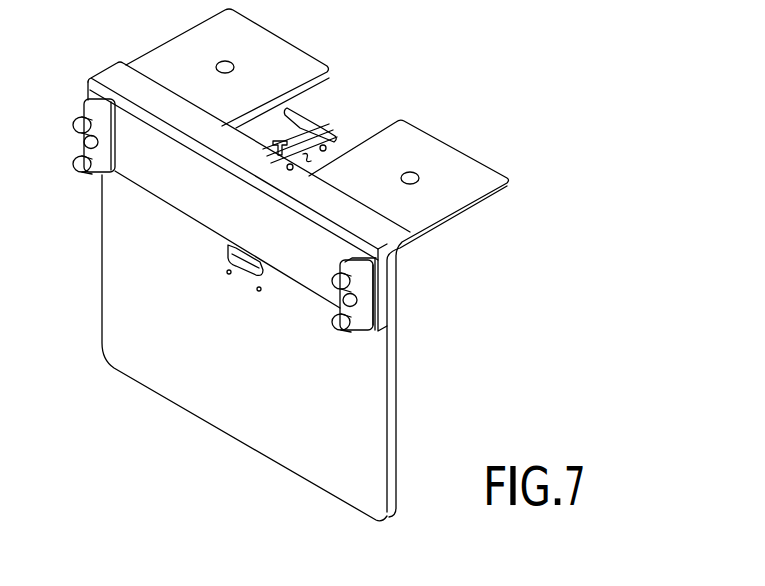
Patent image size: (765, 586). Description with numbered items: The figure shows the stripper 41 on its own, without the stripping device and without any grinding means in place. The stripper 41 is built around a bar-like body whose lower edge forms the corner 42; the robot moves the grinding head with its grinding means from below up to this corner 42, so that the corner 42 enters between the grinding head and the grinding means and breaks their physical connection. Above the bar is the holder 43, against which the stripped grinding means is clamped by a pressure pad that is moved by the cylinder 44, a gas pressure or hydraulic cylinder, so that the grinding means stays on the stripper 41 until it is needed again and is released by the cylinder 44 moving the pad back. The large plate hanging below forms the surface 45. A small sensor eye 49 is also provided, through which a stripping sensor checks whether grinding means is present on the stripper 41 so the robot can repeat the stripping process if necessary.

The stripper 41 is at (277, 265).
The corner 42 is at (162, 205).
The holder 43 is at (213, 202).
The cylinder 44 is at (343, 148).
The surface 45 is at (227, 351).
The sensor eye 49 is at (251, 273).